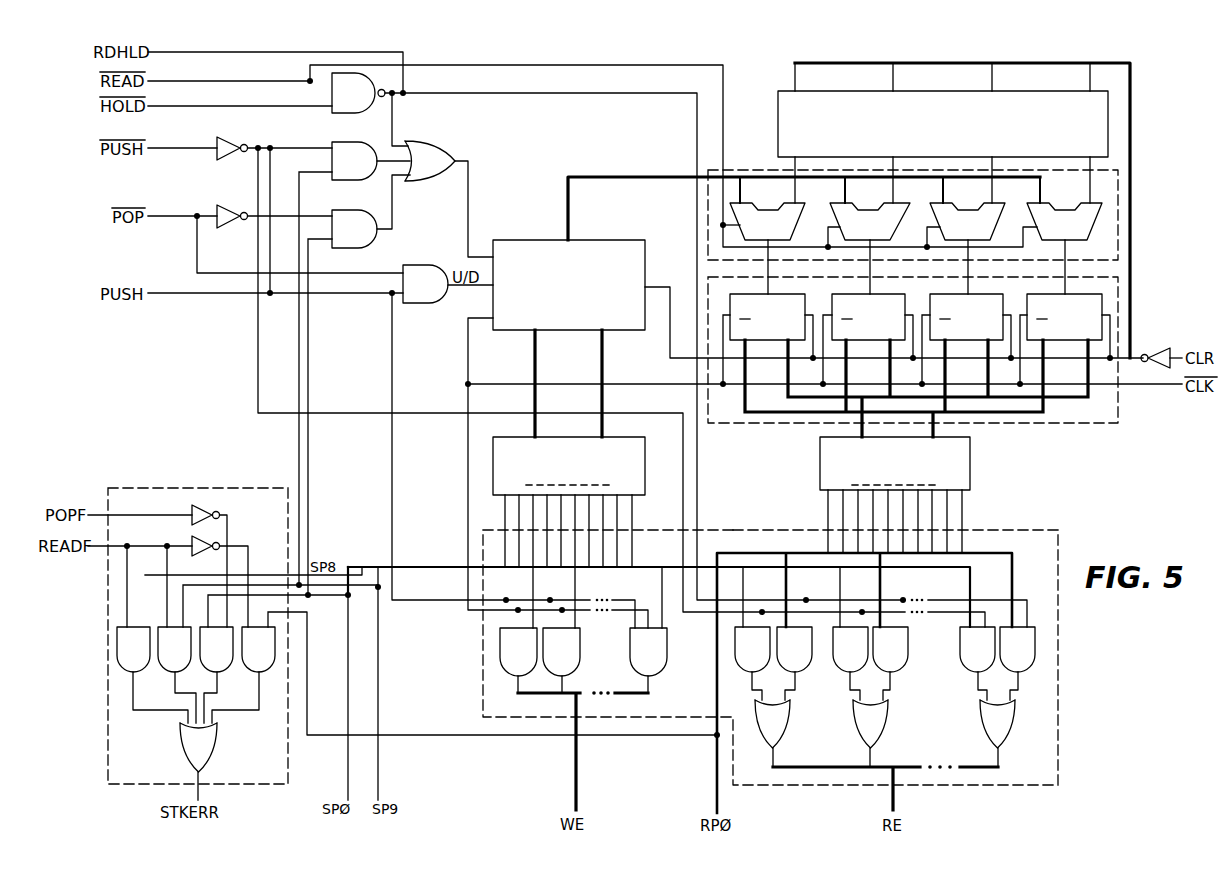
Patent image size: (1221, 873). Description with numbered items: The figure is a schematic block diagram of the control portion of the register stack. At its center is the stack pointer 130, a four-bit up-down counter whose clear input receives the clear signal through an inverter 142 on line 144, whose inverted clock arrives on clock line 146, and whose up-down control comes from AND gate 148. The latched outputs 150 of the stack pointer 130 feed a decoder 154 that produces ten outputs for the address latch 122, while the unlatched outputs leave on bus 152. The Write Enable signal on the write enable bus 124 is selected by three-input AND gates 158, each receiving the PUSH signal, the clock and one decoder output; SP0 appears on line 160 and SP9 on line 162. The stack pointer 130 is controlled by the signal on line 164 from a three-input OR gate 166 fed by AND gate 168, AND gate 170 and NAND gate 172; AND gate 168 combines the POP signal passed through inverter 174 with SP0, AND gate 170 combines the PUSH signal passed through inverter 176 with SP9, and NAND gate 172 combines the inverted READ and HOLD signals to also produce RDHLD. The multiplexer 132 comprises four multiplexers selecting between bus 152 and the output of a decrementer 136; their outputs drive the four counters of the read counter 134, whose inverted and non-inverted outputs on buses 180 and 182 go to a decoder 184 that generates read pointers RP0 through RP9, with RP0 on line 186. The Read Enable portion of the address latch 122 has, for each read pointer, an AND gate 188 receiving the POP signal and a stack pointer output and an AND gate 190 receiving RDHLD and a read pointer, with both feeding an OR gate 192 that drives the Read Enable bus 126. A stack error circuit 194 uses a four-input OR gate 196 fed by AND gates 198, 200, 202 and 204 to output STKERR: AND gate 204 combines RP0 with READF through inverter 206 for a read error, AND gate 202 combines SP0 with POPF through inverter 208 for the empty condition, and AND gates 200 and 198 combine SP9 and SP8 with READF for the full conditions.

The address latch 122 is at (478, 703).
The write enable bus 124 is at (578, 758).
The Read Enable bus 126 is at (887, 803).
The stack pointer 130 is at (590, 240).
The multiplexer 132 is at (708, 212).
The read counter 134 is at (1118, 283).
The decrementer 136 is at (778, 100).
The inverter 142 is at (1158, 348).
The line 144 is at (670, 346).
The clock line 146 is at (466, 332).
The AND gate 148 is at (420, 265).
The latched outputs 150 is at (598, 359).
The bus 152 is at (598, 176).
The decoder 154 is at (646, 495).
The three-input AND gates 158 is at (578, 665).
The line 160 is at (348, 758).
The line 162 is at (379, 758).
The line 164 is at (470, 191).
The three-input OR gate 166 is at (438, 144).
The AND gate 168 is at (350, 248).
The AND gate 170 is at (350, 180).
The NAND gate 172 is at (332, 112).
The inverter 174 is at (217, 205).
The inverter 176 is at (217, 138).
The bus 180 is at (860, 436).
The bus 182 is at (935, 436).
The decoder 184 is at (970, 488).
The line 186 is at (714, 792).
The AND gate 188 is at (735, 663).
The AND gate 190 is at (805, 672).
The OR gate 192 is at (790, 730).
The stack error circuit 194 is at (234, 488).
The four-input OR gate 196 is at (182, 758).
The AND gate 198 is at (117, 645).
The AND gate 200 is at (168, 672).
The AND gate 202 is at (226, 672).
The AND gate 204 is at (275, 648).
The inverter 206 is at (192, 540).
The inverter 208 is at (192, 508).